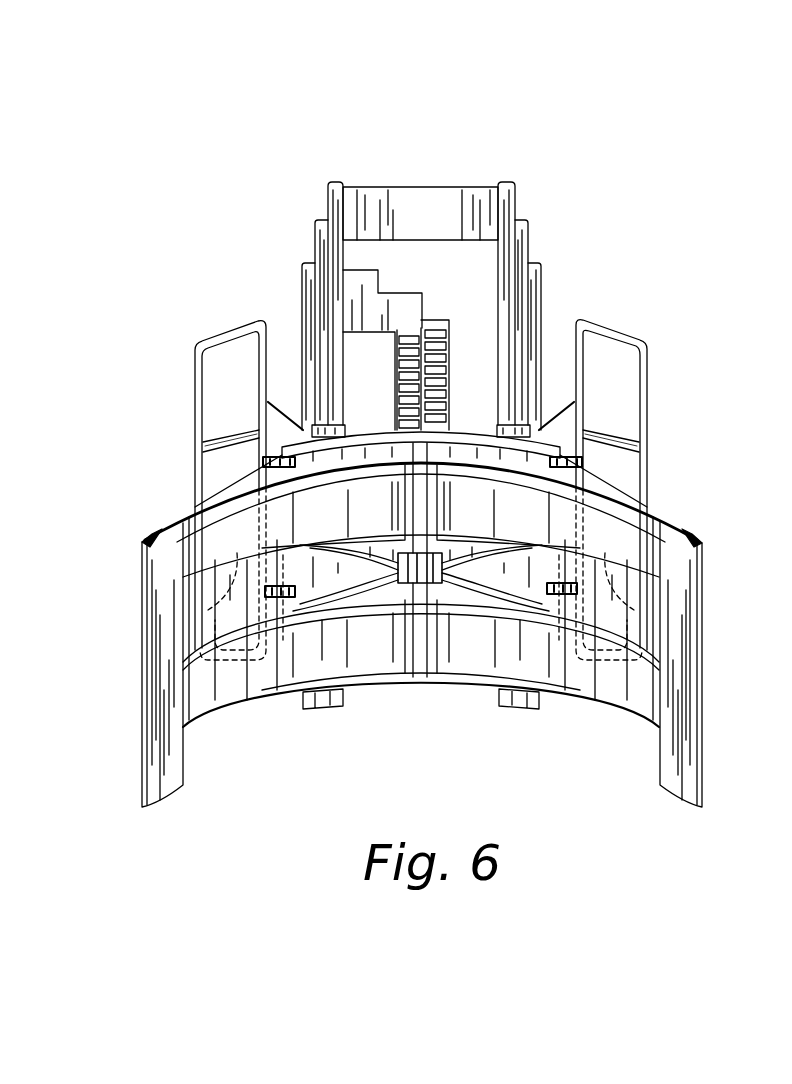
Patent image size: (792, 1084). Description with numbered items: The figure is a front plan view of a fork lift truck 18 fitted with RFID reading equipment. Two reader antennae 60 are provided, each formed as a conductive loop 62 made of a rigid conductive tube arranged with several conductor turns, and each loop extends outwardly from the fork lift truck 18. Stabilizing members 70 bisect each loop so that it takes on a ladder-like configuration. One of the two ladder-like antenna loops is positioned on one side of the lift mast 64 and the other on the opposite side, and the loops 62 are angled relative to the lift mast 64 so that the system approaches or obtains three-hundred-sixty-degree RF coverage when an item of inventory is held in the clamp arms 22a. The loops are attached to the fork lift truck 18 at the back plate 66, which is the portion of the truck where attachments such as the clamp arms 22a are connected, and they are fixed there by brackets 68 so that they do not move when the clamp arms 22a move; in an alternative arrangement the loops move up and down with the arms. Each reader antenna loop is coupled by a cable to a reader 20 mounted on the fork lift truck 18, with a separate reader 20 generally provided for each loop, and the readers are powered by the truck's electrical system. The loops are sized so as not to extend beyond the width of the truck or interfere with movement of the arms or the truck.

The fork lift truck 18 is at (596, 196).
The reader 20 is at (340, 428).
The clamp arms 22a is at (342, 520).
The reader antenna 60 is at (205, 332).
The conductive loop 62 is at (257, 317).
The lift mast 64 is at (443, 187).
The back plate 66 is at (553, 438).
The bracket 68 is at (263, 464).
The stabilizing members 70 is at (231, 432).